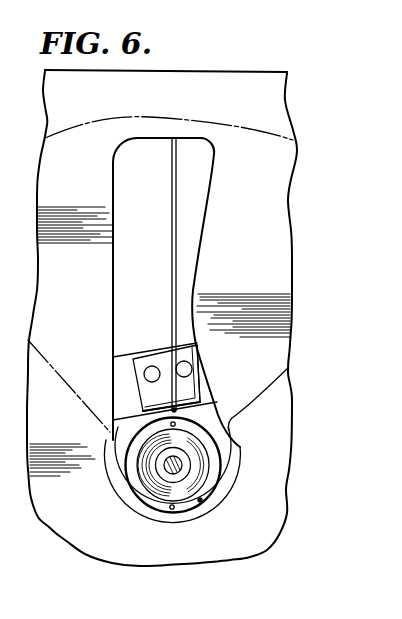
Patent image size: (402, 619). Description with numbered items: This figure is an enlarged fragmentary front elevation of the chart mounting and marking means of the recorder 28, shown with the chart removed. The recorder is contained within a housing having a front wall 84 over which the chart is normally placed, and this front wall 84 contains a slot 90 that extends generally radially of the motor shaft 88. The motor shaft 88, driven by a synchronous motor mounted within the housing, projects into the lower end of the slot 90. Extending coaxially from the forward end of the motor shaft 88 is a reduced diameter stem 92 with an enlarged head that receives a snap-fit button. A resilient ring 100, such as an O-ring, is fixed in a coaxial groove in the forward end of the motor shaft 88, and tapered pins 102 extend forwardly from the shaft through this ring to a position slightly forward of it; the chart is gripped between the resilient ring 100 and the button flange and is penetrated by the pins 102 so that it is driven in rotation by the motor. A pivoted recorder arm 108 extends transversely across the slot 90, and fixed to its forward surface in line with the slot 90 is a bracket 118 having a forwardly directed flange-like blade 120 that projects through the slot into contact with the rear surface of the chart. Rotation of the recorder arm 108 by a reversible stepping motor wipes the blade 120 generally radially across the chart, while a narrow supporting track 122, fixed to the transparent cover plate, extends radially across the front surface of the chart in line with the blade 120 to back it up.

The recorder 28 is at (283, 70).
The front wall 84 is at (90, 191).
The slot 90 is at (118, 263).
The track 122 is at (177, 229).
The recorder arm 108 is at (117, 378).
The bracket 118 is at (190, 356).
The blade 120 is at (194, 398).
The tapered pins 102 is at (176, 424).
The stem 92 is at (163, 470).
The motor shaft 88 is at (140, 505).
The resilient ring 100 is at (202, 502).